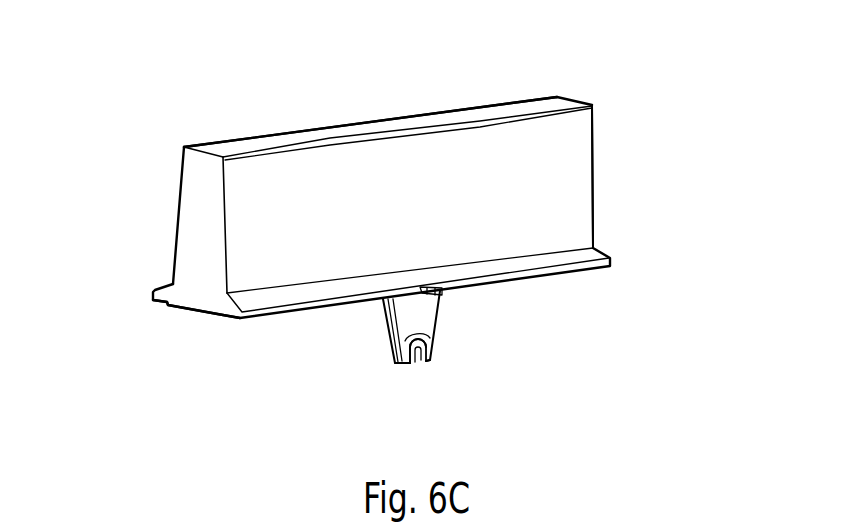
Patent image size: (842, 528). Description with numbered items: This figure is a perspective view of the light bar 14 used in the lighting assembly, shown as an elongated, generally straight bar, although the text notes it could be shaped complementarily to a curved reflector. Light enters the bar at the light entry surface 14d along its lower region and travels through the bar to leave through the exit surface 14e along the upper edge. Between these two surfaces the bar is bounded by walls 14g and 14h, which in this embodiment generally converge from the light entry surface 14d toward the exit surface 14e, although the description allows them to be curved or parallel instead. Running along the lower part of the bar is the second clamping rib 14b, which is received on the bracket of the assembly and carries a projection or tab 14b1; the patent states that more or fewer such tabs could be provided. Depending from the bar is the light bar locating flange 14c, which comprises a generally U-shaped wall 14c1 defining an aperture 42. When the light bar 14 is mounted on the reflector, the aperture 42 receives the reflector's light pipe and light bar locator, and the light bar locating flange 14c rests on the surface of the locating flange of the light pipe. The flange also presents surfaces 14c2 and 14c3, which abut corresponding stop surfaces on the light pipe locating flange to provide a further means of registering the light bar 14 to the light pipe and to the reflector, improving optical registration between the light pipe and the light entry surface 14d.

The light bar 14 is at (555, 150).
The exit surface 14e is at (391, 120).
The wall 14h is at (176, 221).
The wall 14g is at (593, 177).
The second clamping rib 14b is at (596, 272).
The projection or tab 14b1 is at (442, 292).
The light entry surface 14d is at (196, 309).
The light bar locating flange 14c is at (427, 318).
The generally U-shaped wall 14c1 is at (432, 338).
The surface 14c2 is at (403, 364).
The surface 14c3 is at (432, 365).
The aperture 42 is at (415, 383).